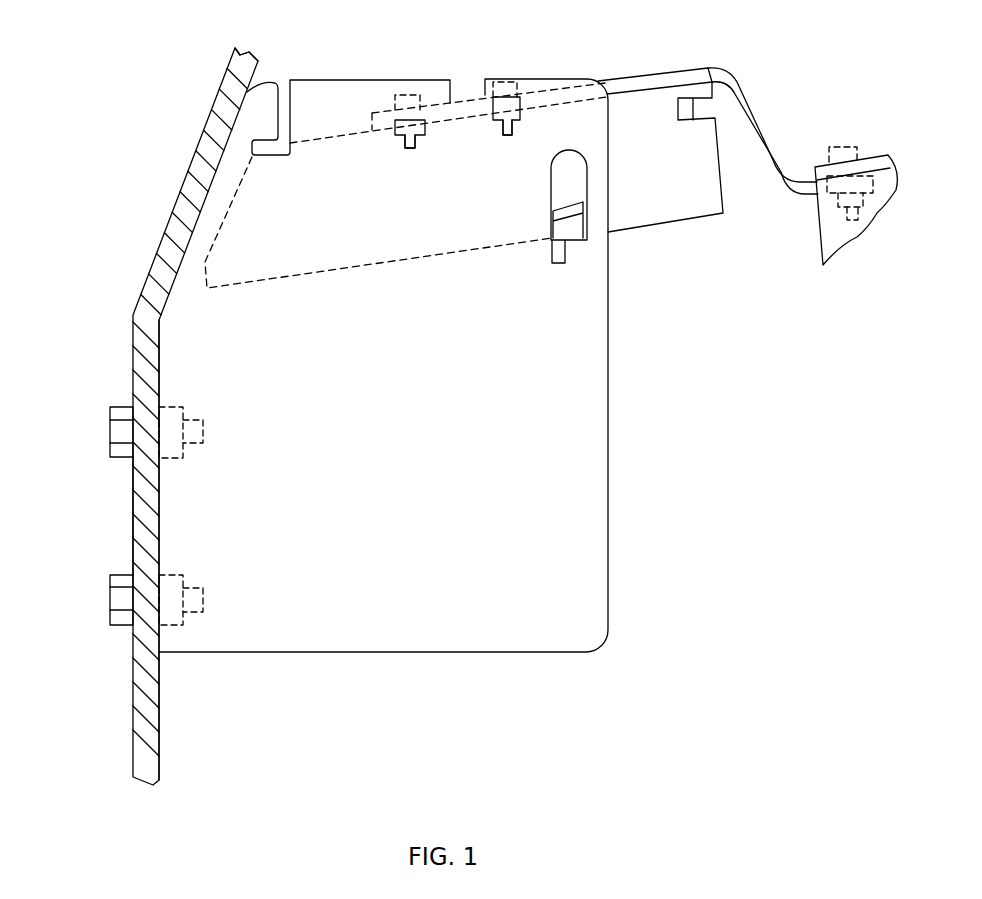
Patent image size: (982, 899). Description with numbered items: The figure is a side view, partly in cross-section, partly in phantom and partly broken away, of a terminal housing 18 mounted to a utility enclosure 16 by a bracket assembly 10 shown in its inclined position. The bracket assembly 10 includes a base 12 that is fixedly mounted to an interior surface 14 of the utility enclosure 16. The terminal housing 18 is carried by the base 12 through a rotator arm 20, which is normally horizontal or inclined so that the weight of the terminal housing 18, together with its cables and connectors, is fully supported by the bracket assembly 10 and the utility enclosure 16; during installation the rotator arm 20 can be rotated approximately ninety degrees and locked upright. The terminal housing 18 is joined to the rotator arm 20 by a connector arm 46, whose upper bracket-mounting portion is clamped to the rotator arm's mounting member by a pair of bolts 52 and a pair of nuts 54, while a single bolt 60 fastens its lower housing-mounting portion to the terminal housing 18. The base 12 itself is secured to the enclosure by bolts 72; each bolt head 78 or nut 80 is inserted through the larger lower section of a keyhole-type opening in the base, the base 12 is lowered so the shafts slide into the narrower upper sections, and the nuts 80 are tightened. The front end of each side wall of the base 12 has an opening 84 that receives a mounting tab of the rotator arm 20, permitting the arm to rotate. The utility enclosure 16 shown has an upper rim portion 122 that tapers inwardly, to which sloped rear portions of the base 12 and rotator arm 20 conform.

The bracket assembly 10 is at (688, 472).
The base 12 is at (587, 588).
The interior surface 14 is at (159, 685).
The utility enclosure 16 is at (140, 728).
The terminal housing 18 is at (855, 237).
The rotator arm 20 is at (673, 222).
The connector arm 46 is at (733, 70).
The bolts 52 is at (403, 97).
The nuts 54 is at (493, 123).
The bolt 60 is at (845, 147).
The bolts 72 is at (108, 433).
The bolt head 78 is at (117, 575).
The nut 80 is at (183, 458).
The opening 84 is at (565, 183).
The upper rim portion 122 is at (192, 168).